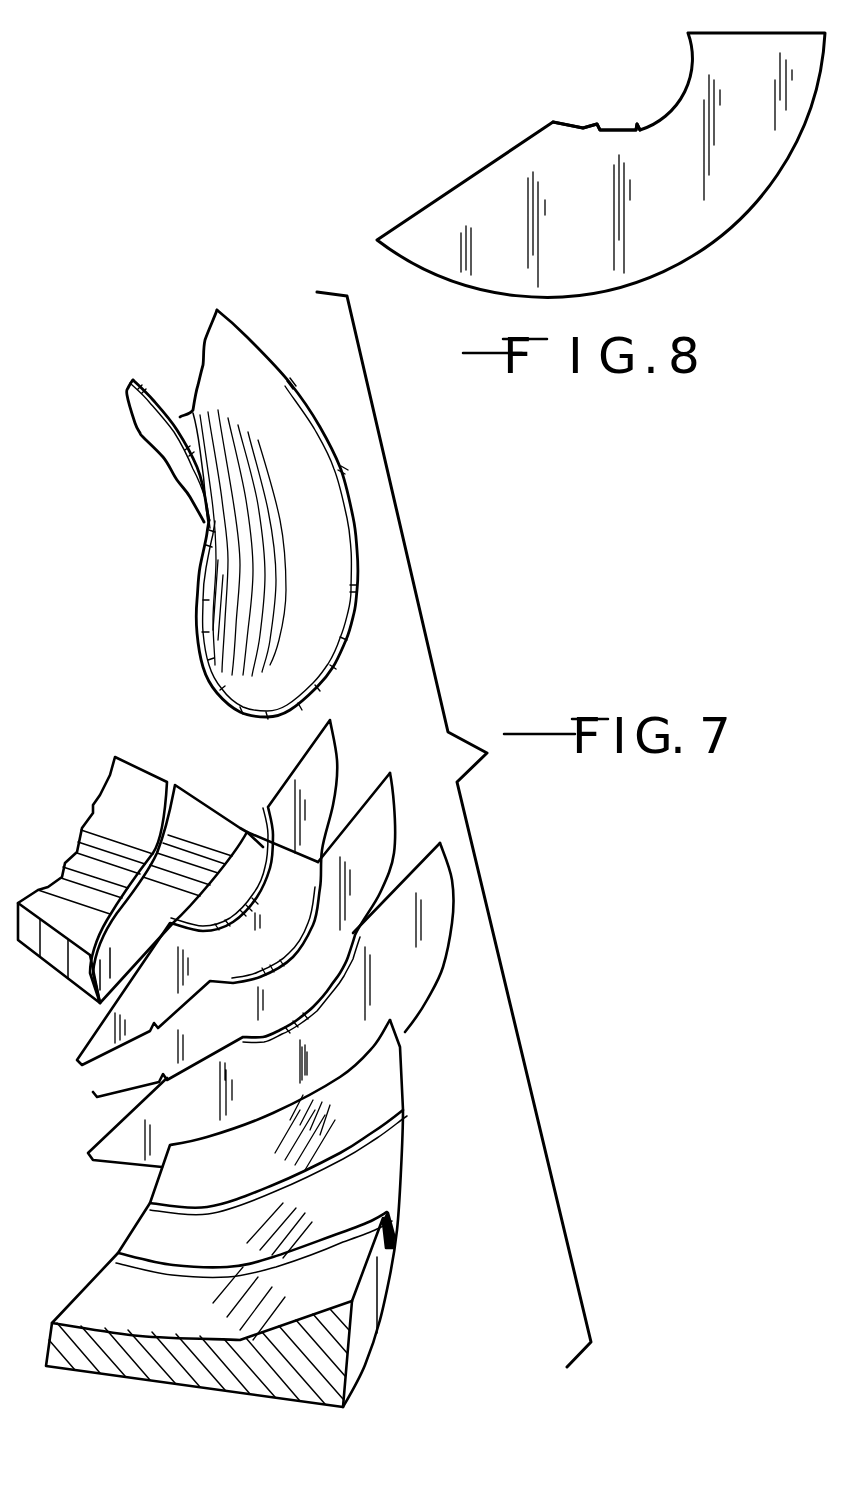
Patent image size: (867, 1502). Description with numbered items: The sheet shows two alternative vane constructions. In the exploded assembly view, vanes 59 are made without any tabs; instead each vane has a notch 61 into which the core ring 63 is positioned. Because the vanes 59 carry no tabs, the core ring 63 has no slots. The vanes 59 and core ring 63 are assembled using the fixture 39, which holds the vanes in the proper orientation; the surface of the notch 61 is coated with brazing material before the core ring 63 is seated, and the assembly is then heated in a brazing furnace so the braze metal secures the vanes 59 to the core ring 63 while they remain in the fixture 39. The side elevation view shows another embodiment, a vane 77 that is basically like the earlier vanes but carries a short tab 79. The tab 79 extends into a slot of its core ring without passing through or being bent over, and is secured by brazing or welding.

In FIG. 7, the fixture 39 is at (377, 1280).
In FIG. 7, the vanes 59 is at (400, 960).
In FIG. 7, the notch 61 is at (257, 827).
In FIG. 7, the core ring 63 is at (200, 376).
In FIG. 8, the vane 77 is at (487, 203).
In FIG. 8, the tab 79 is at (598, 130).